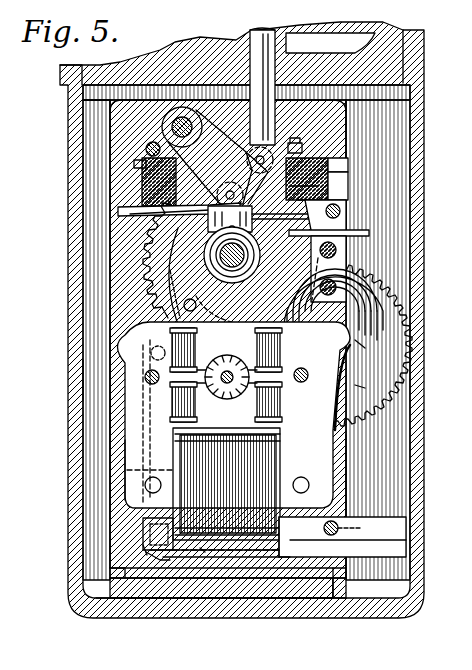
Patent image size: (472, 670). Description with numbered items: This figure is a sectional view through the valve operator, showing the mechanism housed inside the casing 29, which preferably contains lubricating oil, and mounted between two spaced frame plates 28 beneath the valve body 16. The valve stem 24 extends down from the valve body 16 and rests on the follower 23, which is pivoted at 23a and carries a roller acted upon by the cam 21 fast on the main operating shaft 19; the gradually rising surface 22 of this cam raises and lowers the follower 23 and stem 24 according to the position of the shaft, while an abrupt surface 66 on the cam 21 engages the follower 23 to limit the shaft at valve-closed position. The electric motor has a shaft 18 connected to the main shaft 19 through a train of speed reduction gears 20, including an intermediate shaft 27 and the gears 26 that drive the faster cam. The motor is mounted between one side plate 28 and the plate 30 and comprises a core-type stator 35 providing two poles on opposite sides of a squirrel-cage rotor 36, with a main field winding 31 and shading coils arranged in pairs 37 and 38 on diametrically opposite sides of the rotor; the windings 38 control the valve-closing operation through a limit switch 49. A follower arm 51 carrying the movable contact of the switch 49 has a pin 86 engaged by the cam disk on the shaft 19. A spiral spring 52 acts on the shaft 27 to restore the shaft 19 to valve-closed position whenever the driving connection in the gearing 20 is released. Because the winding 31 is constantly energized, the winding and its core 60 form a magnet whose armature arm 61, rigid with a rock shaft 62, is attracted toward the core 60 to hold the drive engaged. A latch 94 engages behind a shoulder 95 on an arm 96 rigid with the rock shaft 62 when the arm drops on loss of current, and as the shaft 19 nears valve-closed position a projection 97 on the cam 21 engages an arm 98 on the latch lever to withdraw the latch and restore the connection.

The valve body 16 is at (416, 52).
The motor shaft 18 is at (236, 381).
The main operating shaft 19 is at (148, 254).
The train of speed reduction gears 20 is at (152, 228).
The cam 21 is at (173, 277).
The gradually rising cam surface 22 is at (165, 311).
The follower 23 is at (258, 148).
The follower pivot 23a is at (170, 126).
The valve stem 24 is at (266, 50).
The gears 26 is at (470, 147).
The intermediate shaft 27 is at (360, 345).
The frame plates 28 is at (118, 144).
The casing 29 is at (77, 375).
The plate 30 is at (363, 387).
The main field winding 31 is at (178, 499).
The stator 35 is at (127, 445).
The squirrel-cage rotor 36 is at (251, 332).
The shading coil pair 37 is at (150, 365).
The shading coil pair 38 is at (180, 394).
The limit switch 49 is at (311, 223).
The follower arm 51 is at (273, 220).
The spring 52 is at (369, 324).
The core 60 is at (338, 527).
The armature arm 61 is at (301, 540).
The rock shaft 62 is at (331, 536).
The abrupt cam surface 66 is at (292, 147).
The pin 86 is at (224, 258).
The latch 94 is at (125, 470).
The shoulder 95 is at (148, 545).
The arm 96 is at (203, 550).
The projection 97 is at (166, 336).
The latch lever arm 98 is at (170, 322).